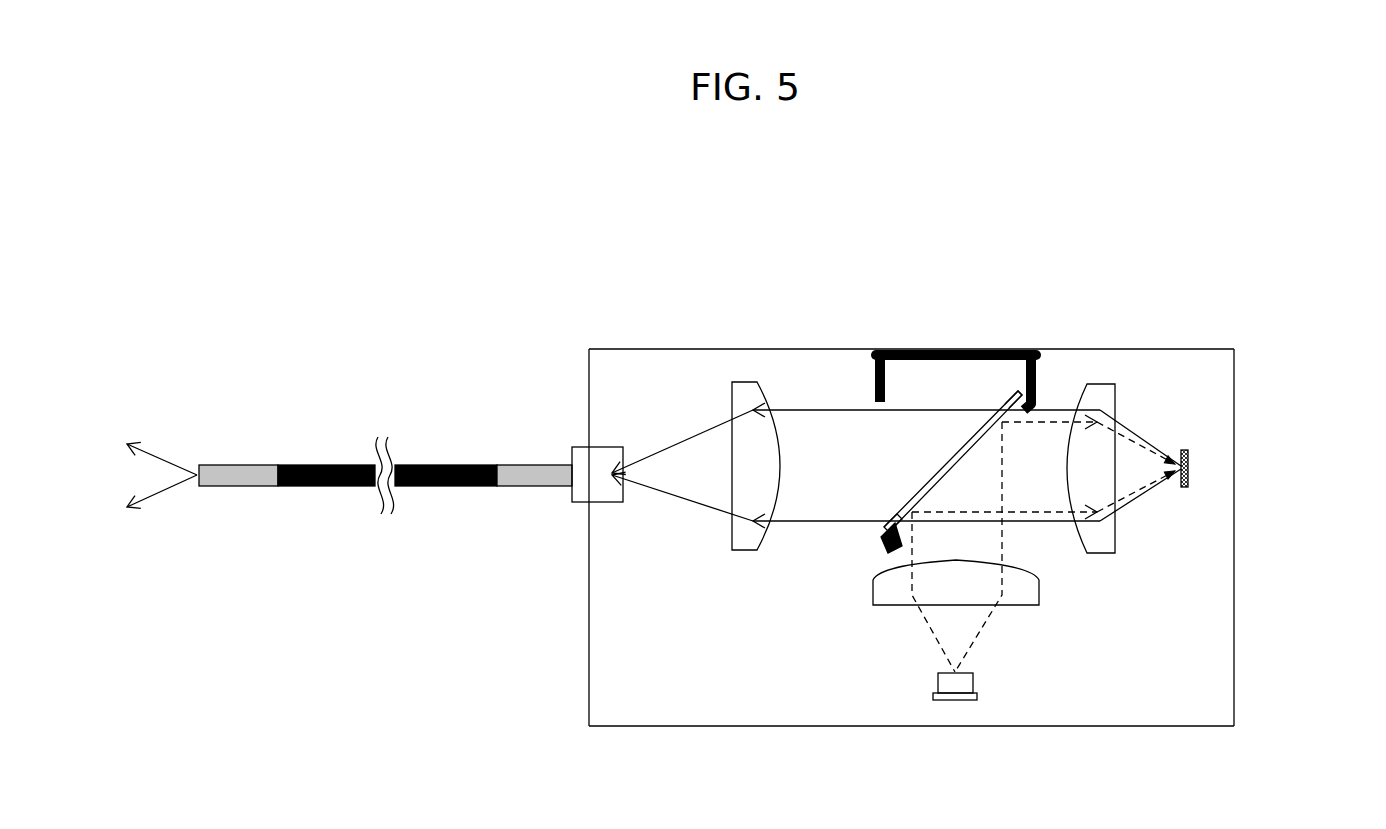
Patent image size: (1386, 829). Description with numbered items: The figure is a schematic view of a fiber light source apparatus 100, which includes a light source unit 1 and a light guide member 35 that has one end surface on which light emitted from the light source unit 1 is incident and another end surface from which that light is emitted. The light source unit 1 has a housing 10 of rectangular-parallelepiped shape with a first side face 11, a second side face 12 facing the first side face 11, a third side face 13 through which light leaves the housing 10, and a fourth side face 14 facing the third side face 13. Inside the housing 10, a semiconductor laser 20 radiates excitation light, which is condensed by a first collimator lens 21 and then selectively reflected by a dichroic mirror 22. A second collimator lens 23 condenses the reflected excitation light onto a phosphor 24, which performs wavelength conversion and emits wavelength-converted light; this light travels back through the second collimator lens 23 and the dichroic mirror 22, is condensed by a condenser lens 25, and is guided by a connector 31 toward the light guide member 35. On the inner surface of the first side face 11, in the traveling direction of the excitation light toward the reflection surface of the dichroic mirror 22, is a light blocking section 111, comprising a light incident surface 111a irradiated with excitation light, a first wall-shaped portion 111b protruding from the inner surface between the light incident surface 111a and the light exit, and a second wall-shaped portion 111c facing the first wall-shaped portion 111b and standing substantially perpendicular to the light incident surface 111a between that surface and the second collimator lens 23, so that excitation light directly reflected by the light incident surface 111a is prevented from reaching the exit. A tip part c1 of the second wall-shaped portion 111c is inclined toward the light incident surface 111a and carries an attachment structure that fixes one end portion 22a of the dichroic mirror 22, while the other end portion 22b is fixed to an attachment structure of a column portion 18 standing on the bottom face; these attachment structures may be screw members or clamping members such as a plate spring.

The fiber light source apparatus 100 is at (518, 259).
The light source unit 1 is at (841, 263).
The housing 10 is at (911, 541).
The first side face 11 is at (633, 349).
The second side face 12 is at (1020, 727).
The third side face 13 is at (589, 643).
The fourth side face 14 is at (1234, 595).
The light guide member 35 is at (446, 453).
The connector 31 is at (578, 450).
The condenser lens 25 is at (752, 381).
The light blocking section 111 is at (975, 328).
The light incident surface 111a is at (980, 350).
The first wall-shaped portion 111b is at (910, 350).
The second wall-shaped portion 111c is at (1020, 350).
The tip part c1 is at (1020, 389).
The dichroic mirror 22 is at (918, 470).
The one end portion of the dichroic mirror 22a is at (997, 400).
The other end portion of the dichroic mirror 22b is at (882, 527).
The column portion 18 is at (883, 543).
The second collimator lens 23 is at (1105, 385).
The phosphor 24 is at (1188, 460).
The first collimator lens 21 is at (873, 605).
The semiconductor laser 20 is at (975, 683).